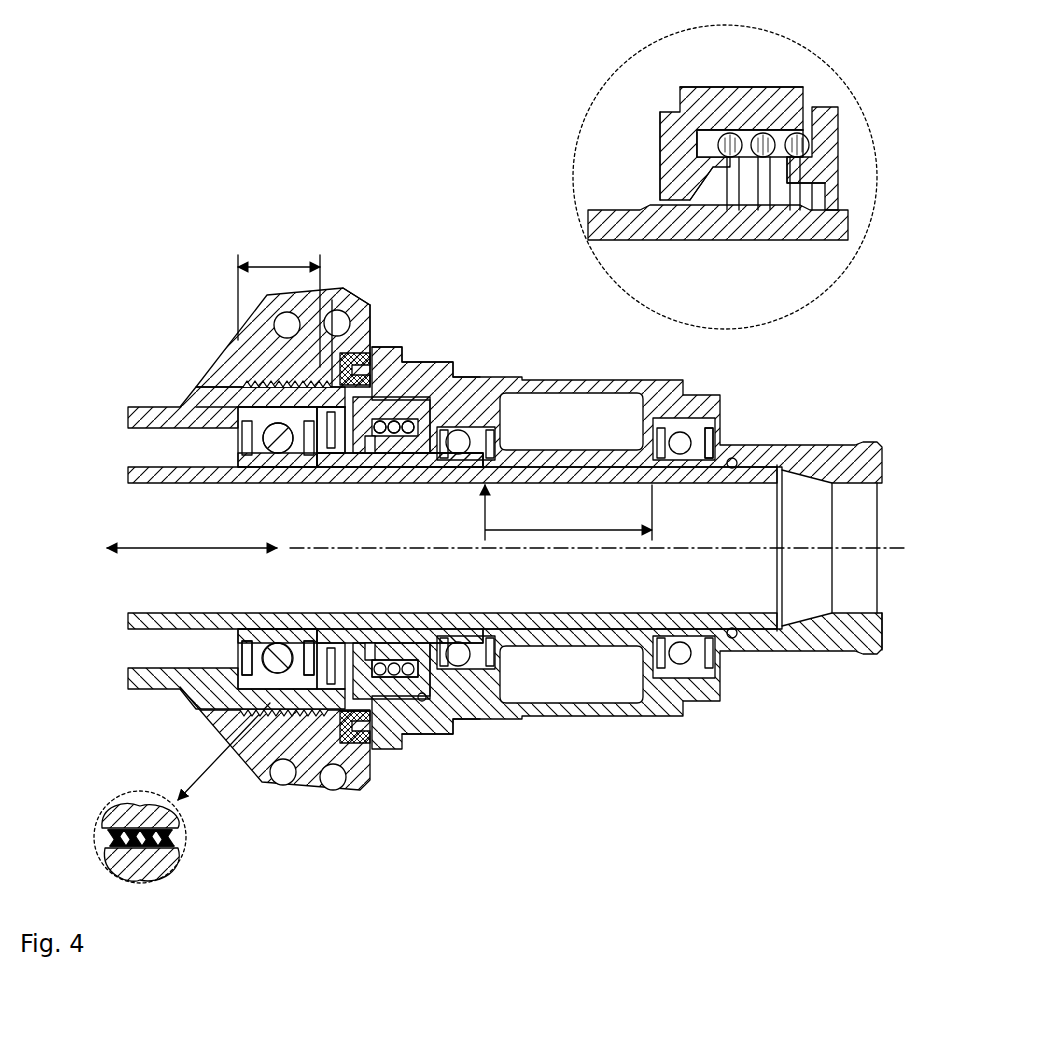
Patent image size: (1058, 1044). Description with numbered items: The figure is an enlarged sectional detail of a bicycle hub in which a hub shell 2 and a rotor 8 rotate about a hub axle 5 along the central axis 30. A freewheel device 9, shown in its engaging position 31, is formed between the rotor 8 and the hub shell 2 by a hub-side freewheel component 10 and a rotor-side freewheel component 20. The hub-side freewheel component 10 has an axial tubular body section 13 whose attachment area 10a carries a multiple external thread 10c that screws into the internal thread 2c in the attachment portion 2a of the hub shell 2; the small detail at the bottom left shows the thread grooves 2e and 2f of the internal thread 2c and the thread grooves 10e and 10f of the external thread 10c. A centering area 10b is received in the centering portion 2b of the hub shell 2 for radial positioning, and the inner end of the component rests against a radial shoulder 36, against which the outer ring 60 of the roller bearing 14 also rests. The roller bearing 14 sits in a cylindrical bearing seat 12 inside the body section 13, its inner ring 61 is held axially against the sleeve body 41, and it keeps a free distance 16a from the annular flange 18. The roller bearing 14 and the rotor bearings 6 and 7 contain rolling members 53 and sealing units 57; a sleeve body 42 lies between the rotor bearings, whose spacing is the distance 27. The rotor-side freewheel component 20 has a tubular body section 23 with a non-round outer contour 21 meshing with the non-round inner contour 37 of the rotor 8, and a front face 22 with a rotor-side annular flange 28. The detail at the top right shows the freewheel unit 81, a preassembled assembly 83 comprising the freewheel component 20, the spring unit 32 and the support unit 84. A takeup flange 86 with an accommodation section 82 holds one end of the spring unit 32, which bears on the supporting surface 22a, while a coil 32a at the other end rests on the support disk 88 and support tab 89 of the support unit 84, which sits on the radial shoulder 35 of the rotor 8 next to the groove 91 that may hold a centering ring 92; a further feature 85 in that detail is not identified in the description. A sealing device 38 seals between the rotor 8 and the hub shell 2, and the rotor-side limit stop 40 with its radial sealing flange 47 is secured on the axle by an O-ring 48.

The hub shell 2 is at (150, 870).
The attachment portion 2a is at (280, 262).
The centering portion 2b is at (332, 300).
The internal thread 2c is at (128, 852).
The thread groove 2e is at (118, 842).
The thread groove 2f is at (170, 842).
The hub axle 5 is at (175, 478).
The rotor bearing 6 is at (452, 470).
The rotor bearing 7 is at (681, 470).
The rotor 8 is at (585, 385).
The freewheel device 9 is at (383, 300).
The hub-side freewheel component 10 is at (267, 398).
The attachment area 10a is at (262, 260).
The centering area 10b is at (330, 397).
The multiple external thread 10c is at (233, 387).
The thread groove 10e is at (115, 833).
The thread groove 10f is at (168, 833).
The cylindrical bearing seat 12 is at (245, 707).
The axial tubular body section 13 is at (233, 413).
The roller bearing 14 is at (262, 460).
The free distance 16a is at (330, 724).
The annular flange 18 is at (330, 440).
The rotor-side freewheel component 20 is at (380, 700).
The non-round outer contour 21 is at (395, 400).
The front face 22 is at (655, 160).
The supporting surface 22a is at (700, 145).
The tubular body section 23 is at (392, 665).
The distance 27 is at (550, 548).
The rotor-side annular flange 28 is at (358, 652).
The central axis 30 is at (177, 548).
The engaging position 31 is at (428, 757).
The spring unit 32 is at (392, 440).
The coil 32a is at (757, 195).
The radial shoulder 35 is at (428, 686).
The radial shoulder 36 is at (237, 428).
The non-round inner contour 37 is at (368, 370).
The sealing device 38 is at (365, 745).
The limit stop 40 is at (860, 460).
The sleeve body 41 is at (365, 462).
The sleeve body 42 is at (565, 460).
The radial sealing flange 47 is at (715, 425).
The O-ring 48 is at (730, 468).
The rolling members 53 is at (270, 438).
The sealing unit 57 is at (307, 655).
The outer ring 60 is at (262, 648).
The inner ring 61 is at (275, 635).
The freewheel unit 81 is at (622, 100).
The accommodation section 82 is at (710, 128).
The preassembled assembly 83 is at (815, 80).
The support unit 84 is at (845, 143).
The support edge 85 is at (820, 183).
The takeup flange 86 is at (710, 170).
The support disk 88 is at (830, 115).
The support tab 89 is at (790, 175).
The groove 91 is at (432, 400).
The ring 92 is at (398, 692).